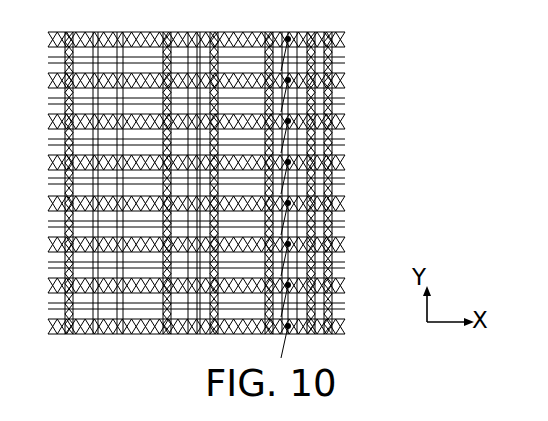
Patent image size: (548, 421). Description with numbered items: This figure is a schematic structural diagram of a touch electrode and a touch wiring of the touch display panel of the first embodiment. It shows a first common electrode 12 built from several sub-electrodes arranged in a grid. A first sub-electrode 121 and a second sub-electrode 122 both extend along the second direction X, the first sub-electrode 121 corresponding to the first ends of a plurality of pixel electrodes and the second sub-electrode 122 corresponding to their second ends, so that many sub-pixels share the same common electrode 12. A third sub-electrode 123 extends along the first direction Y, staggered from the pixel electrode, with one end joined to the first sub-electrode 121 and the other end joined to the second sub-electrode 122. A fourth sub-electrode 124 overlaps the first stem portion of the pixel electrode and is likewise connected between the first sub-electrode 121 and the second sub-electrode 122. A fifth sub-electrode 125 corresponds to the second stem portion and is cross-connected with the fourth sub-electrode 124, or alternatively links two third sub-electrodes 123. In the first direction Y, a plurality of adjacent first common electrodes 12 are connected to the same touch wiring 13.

The first common electrode 12 is at (266, 110).
The first sub-electrode 121 is at (338, 40).
The second sub-electrode 122 is at (340, 77).
The third sub-electrode 123 is at (333, 148).
The fourth sub-electrode 124 is at (240, 179).
The fifth sub-electrode 125 is at (338, 99).
The touch wiring 13 is at (333, 240).